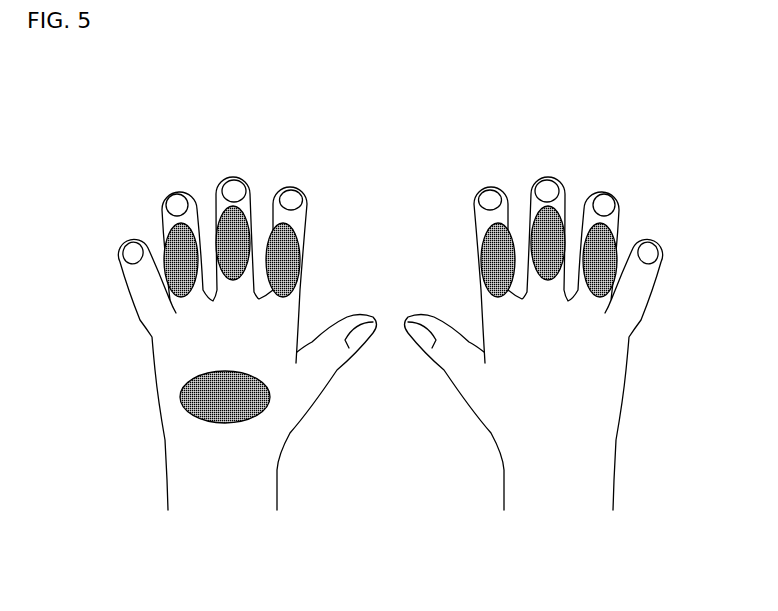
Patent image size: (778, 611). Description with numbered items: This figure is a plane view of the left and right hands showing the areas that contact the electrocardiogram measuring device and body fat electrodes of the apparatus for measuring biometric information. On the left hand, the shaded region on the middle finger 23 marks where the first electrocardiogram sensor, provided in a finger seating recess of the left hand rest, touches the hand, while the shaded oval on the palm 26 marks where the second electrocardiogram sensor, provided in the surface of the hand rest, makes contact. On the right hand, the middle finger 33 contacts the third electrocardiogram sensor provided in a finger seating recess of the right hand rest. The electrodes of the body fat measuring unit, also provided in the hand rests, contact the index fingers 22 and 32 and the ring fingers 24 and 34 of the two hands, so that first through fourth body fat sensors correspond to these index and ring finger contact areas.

The index finger 22 is at (300, 237).
The middle finger 23 is at (243, 225).
The ring finger 24 is at (172, 238).
The palm 26 is at (183, 403).
The index finger 32 is at (487, 237).
The middle finger 33 is at (560, 223).
The ring finger 34 is at (607, 237).